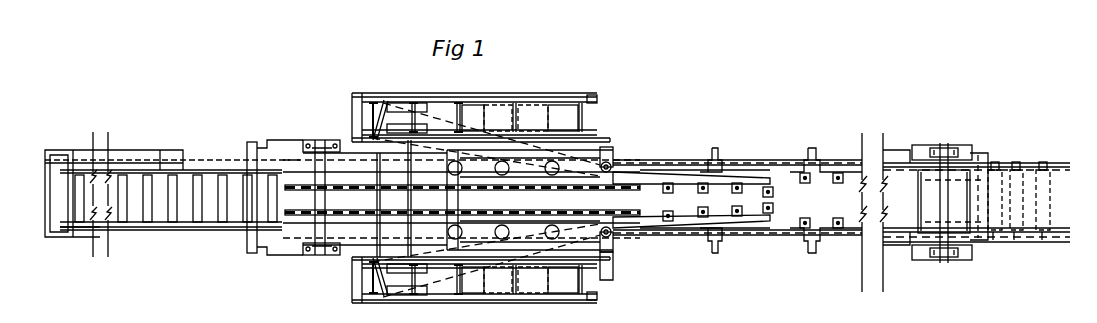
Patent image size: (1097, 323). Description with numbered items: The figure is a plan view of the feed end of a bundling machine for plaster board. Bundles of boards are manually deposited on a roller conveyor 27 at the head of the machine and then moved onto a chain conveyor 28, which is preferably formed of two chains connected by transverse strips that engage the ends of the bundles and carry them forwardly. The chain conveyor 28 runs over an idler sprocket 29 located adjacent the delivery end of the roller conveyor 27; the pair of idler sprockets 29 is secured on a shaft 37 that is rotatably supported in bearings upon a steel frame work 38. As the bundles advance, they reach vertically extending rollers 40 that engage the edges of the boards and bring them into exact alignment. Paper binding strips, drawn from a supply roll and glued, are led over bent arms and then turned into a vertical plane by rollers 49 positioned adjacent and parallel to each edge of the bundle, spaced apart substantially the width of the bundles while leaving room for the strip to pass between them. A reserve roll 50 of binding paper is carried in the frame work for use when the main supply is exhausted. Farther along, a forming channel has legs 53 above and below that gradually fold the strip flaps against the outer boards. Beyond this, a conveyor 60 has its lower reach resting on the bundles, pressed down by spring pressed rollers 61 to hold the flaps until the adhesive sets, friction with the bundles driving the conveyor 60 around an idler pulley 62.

The roller conveyor 27 is at (177, 190).
The chain conveyor 28 is at (333, 212).
The idler sprocket 29 is at (308, 187).
The shaft 37 is at (320, 232).
The steel frame work 38 is at (273, 247).
The vertically extending rollers 40 is at (552, 161).
The rollers 49 is at (612, 163).
The reserve roll 50 is at (603, 282).
The legs 53 is at (756, 178).
The conveyor 60 is at (1058, 236).
The spring pressed rollers 61 is at (1000, 240).
The idler pulley 62 is at (932, 233).